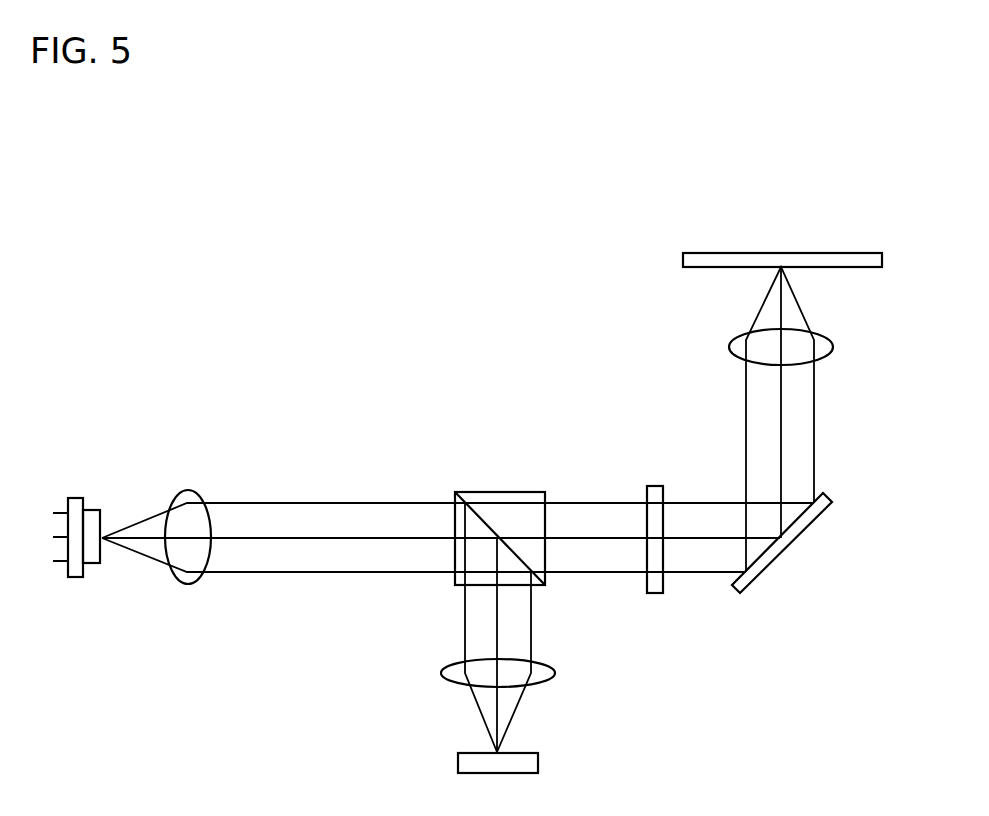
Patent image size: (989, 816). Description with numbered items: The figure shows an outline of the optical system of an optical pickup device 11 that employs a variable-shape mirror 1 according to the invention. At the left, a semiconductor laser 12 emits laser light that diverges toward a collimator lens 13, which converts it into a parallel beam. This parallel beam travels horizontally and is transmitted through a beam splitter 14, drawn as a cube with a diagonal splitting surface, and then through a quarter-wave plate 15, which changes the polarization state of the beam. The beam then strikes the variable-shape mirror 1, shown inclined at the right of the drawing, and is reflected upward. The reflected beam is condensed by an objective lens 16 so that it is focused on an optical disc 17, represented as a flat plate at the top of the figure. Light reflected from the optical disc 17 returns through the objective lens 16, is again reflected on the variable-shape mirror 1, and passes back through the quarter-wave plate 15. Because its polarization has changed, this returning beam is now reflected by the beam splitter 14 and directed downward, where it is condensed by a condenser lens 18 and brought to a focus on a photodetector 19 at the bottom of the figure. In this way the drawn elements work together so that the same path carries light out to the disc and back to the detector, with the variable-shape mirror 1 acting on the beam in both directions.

The variable-shape mirror 1 is at (775, 558).
The optical pickup device 11 is at (387, 328).
The semiconductor laser 12 is at (75, 577).
The collimator lens 13 is at (188, 584).
The beam splitter 14 is at (493, 492).
The quarter-wave plate 15 is at (657, 486).
The objective lens 16 is at (727, 343).
The optical disc 17 is at (697, 253).
The condenser lens 18 is at (555, 673).
The photodetector 19 is at (538, 763).